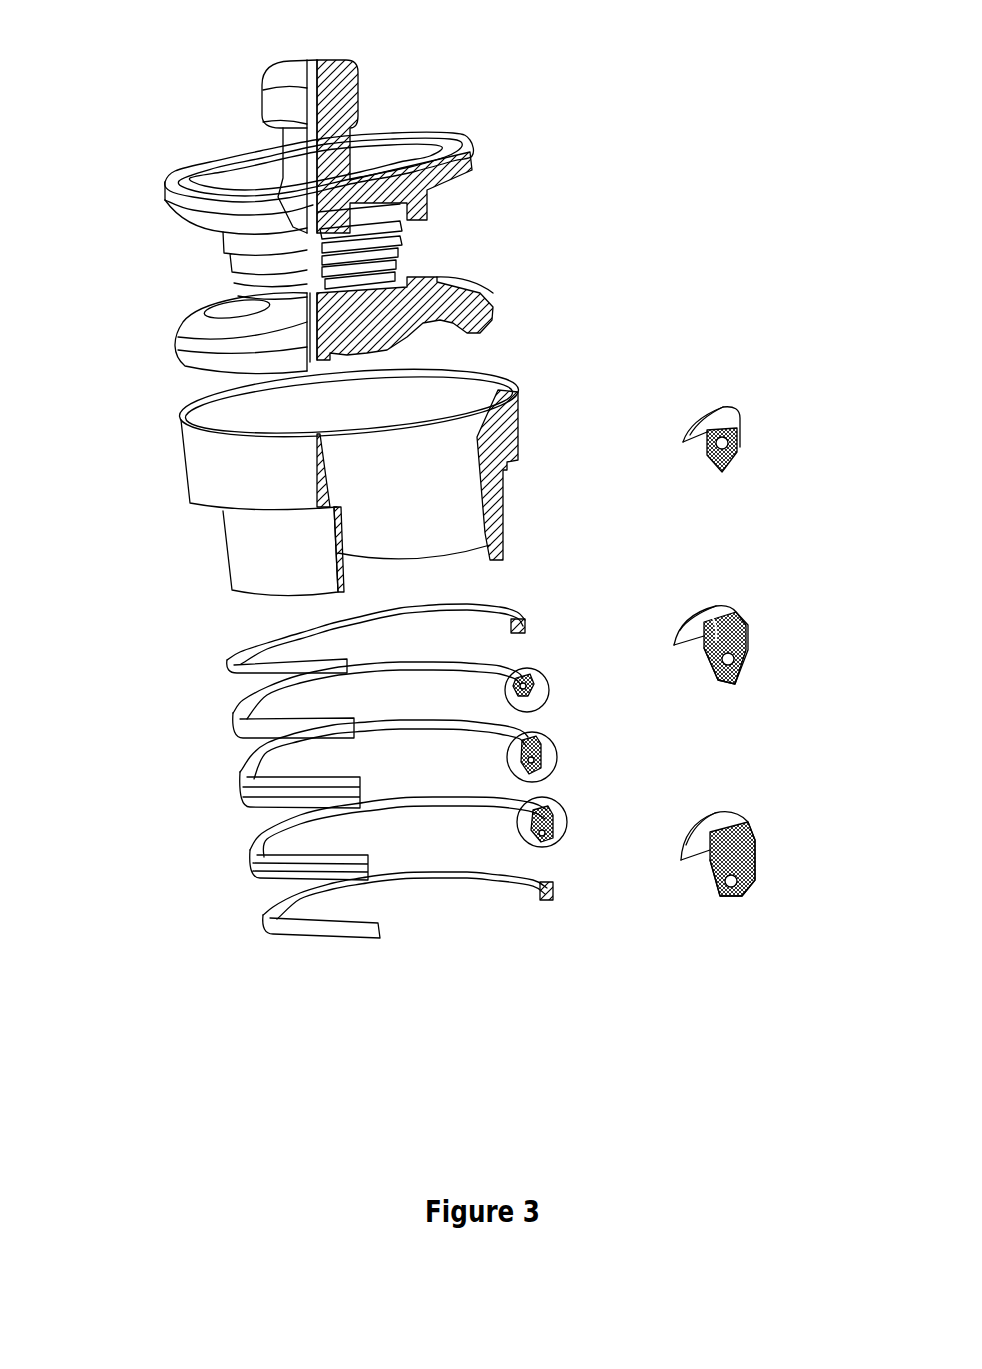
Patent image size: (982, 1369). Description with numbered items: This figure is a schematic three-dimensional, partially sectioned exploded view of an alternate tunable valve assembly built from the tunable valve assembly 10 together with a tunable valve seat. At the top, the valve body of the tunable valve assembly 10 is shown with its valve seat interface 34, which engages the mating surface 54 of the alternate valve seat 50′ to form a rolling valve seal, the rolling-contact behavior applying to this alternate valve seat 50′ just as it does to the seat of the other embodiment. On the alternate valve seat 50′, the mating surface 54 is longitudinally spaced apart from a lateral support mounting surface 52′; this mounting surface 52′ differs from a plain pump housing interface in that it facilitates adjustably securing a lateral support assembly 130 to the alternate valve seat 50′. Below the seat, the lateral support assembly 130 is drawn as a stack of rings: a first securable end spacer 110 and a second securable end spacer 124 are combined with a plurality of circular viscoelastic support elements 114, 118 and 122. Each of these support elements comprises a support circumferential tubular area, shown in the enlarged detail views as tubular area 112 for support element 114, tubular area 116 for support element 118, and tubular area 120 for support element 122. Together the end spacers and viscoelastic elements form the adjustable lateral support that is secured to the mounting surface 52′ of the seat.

The tunable valve assembly 10 is at (185, 108).
The valve seat interface 34 is at (163, 342).
The alternate valve seat 50′ is at (163, 458).
The mating surface 54 is at (233, 422).
The lateral support mounting surface 52′ is at (252, 553).
The lateral support assembly 130 is at (52, 913).
The second securable end spacer 124 is at (225, 655).
The circular viscoelastic support element 122 is at (230, 715).
The circular viscoelastic support element 118 is at (235, 780).
The circular viscoelastic support element 114 is at (247, 848).
The first securable end spacer 110 is at (260, 917).
The support circumferential tubular area 120 is at (722, 443).
The support circumferential tubular area 116 is at (728, 659).
The support circumferential tubular area 112 is at (731, 881).